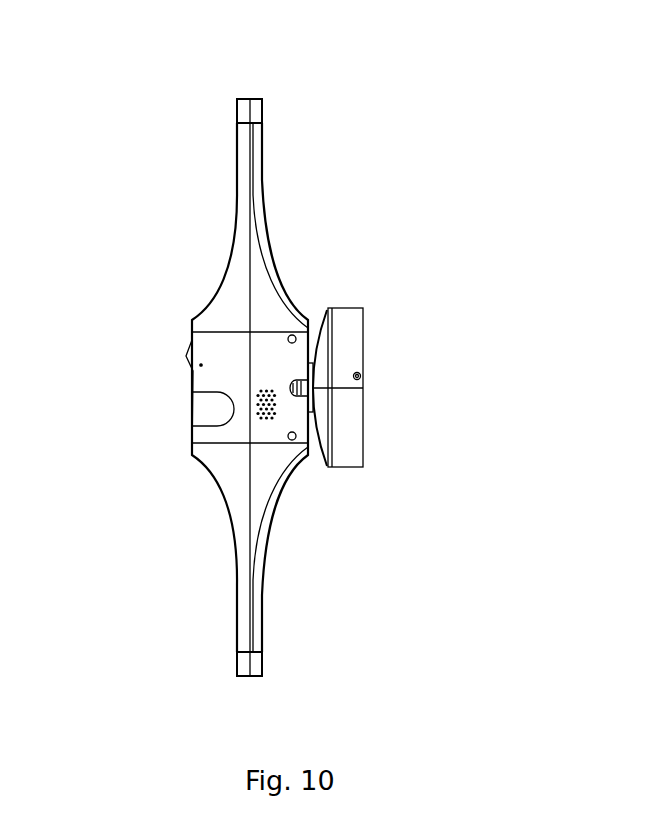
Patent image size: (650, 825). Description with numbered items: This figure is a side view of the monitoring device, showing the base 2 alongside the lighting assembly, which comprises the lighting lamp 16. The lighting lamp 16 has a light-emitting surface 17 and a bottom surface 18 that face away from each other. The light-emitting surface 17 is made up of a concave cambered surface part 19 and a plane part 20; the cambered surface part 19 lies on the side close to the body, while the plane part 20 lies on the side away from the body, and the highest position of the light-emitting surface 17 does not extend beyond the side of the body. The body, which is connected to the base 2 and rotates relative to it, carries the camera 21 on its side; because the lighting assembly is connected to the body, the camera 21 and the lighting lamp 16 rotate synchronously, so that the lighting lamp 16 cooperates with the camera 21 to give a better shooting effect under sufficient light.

The base 2 is at (347, 417).
The lighting lamp 16 is at (237, 117).
The light-emitting surface 17 is at (233, 157).
The bottom surface 18 is at (257, 203).
The cambered surface part 19 is at (210, 288).
The plane part 20 is at (228, 200).
The camera 21 is at (212, 342).